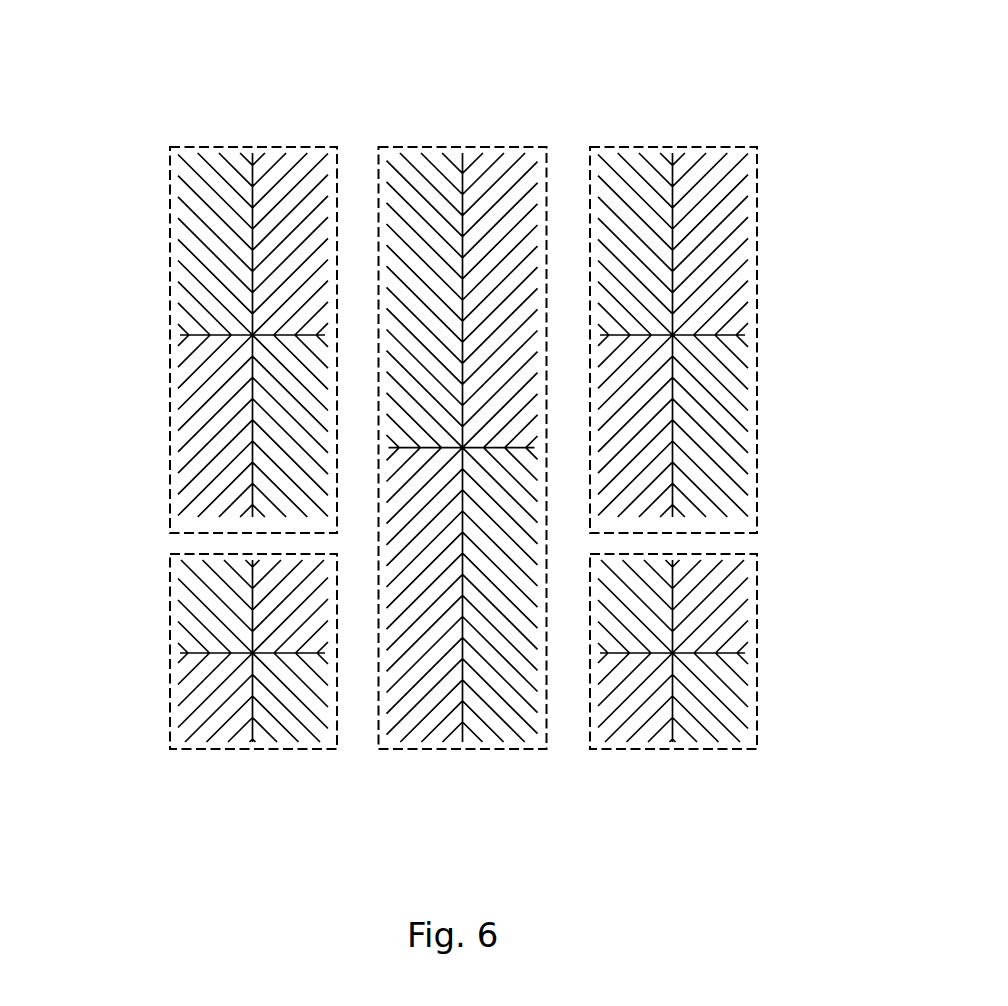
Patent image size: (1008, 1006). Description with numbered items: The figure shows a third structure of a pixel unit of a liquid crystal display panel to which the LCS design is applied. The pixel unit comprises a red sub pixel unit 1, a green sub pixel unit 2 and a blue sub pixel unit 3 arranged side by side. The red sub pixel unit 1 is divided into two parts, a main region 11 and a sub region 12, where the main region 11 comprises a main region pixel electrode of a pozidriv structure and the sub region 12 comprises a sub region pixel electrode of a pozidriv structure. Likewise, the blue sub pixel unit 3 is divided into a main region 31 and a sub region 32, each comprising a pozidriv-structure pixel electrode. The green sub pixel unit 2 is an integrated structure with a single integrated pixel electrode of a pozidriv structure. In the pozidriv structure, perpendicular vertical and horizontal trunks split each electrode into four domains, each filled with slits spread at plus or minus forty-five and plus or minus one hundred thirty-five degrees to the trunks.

The red sub pixel unit 1 is at (183, 448).
The main region 11 is at (170, 494).
The sub region 12 is at (206, 651).
The green sub pixel unit 2 is at (432, 750).
The blue sub pixel unit 3 is at (747, 448).
The main region 31 is at (728, 340).
The sub region 32 is at (727, 650).